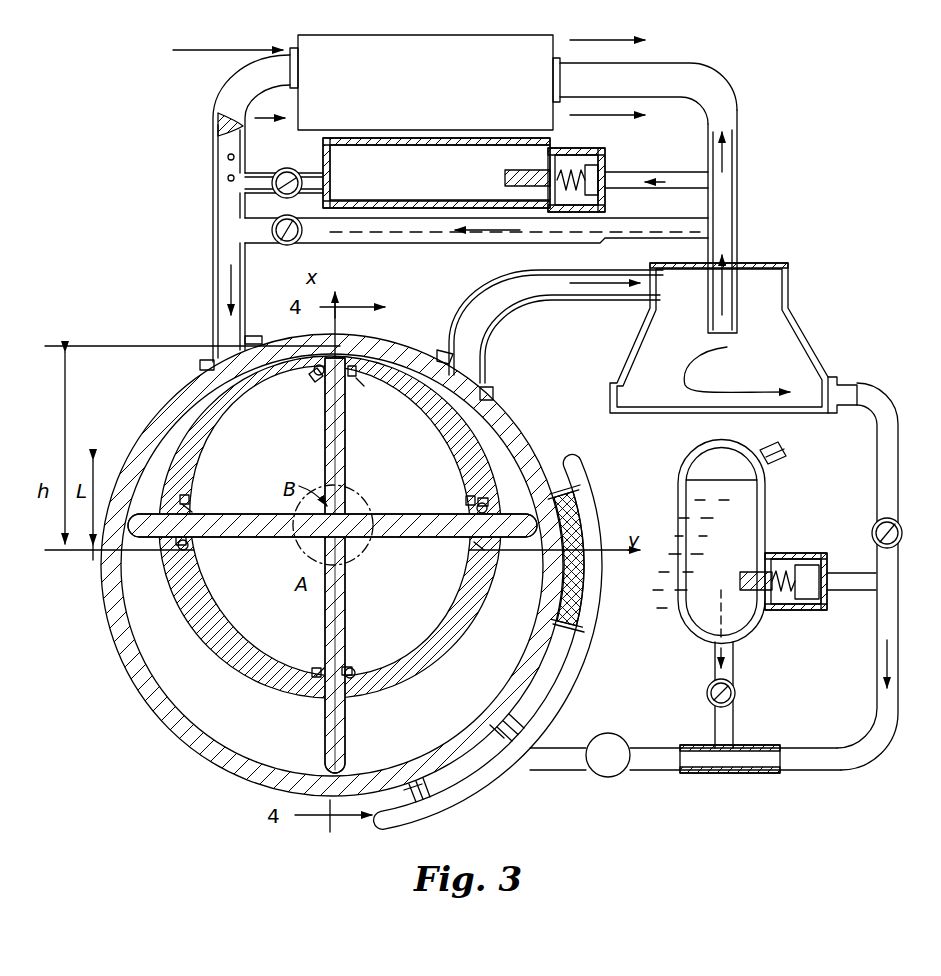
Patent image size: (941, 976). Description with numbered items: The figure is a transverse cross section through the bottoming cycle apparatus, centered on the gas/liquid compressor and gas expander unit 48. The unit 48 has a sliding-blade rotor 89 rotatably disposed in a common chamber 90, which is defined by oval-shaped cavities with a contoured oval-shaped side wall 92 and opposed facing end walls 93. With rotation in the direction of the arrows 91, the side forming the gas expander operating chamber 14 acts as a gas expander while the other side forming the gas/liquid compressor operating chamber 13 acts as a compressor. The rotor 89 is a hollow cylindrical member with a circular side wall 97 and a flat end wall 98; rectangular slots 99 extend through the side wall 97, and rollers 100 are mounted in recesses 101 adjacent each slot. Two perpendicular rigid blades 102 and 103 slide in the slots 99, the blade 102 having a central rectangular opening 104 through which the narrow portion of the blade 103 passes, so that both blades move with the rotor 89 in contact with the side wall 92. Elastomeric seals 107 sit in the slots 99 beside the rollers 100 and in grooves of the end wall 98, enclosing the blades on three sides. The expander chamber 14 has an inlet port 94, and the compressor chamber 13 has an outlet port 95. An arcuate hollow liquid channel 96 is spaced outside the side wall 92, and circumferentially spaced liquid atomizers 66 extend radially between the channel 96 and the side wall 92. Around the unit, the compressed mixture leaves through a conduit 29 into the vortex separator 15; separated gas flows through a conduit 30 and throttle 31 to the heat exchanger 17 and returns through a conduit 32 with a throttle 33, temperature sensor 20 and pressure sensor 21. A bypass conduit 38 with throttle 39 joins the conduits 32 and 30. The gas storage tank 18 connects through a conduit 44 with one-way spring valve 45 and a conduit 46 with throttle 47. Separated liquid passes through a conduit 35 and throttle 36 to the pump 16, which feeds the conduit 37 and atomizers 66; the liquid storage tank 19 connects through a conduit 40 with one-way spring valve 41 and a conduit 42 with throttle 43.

The gas/liquid compressor 13 is at (422, 740).
The gas expander 14 is at (275, 741).
The vortex separator 15 is at (780, 258).
The pump 16 is at (623, 739).
The heat exchanger 17 is at (436, 99).
The gas storage tank 18 is at (436, 187).
The liquid storage tank 19 is at (672, 478).
The temperature sensor 20 is at (226, 180).
The pressure sensor 21 is at (226, 151).
The conduit 29 is at (536, 300).
The conduit 30 is at (724, 66).
The throttle 31 is at (742, 143).
The conduit 32 is at (213, 240).
The throttle 33 is at (216, 132).
The conduit 35 is at (877, 557).
The throttle 36 is at (878, 522).
The conduit 37 is at (569, 771).
The bypass conduit 38 is at (492, 245).
The throttle 39 is at (300, 241).
The conduit 40 is at (858, 592).
The one-way spring valve 41 is at (808, 565).
The conduit 42 is at (736, 676).
The throttle 43 is at (737, 699).
The conduit 44 is at (684, 172).
The one-way spring valve 45 is at (596, 172).
The conduit 46 is at (320, 172).
The throttle 47 is at (288, 168).
The gas/liquid compressor and gas expander unit 48 is at (128, 725).
The liquid atomizers 66 is at (541, 619).
The sliding-blade rotor 89 is at (255, 668).
The common chamber 90 is at (169, 609).
The arrows 91 is at (241, 468).
The side wall 92 is at (149, 654).
The end walls 93 is at (474, 684).
The inlet port 94 is at (228, 377).
The outlet port 95 is at (496, 395).
The liquid channel 96 is at (594, 659).
The circular side wall 97 is at (442, 431).
The flat end wall 98 is at (279, 595).
The slots 99 is at (354, 378).
The rollers 100 is at (318, 376).
The recesses 101 is at (309, 378).
The blade 102 is at (347, 715).
The blade 103 is at (398, 516).
The central rectangular opening 104 is at (347, 565).
The elastomeric seals 107 is at (362, 384).